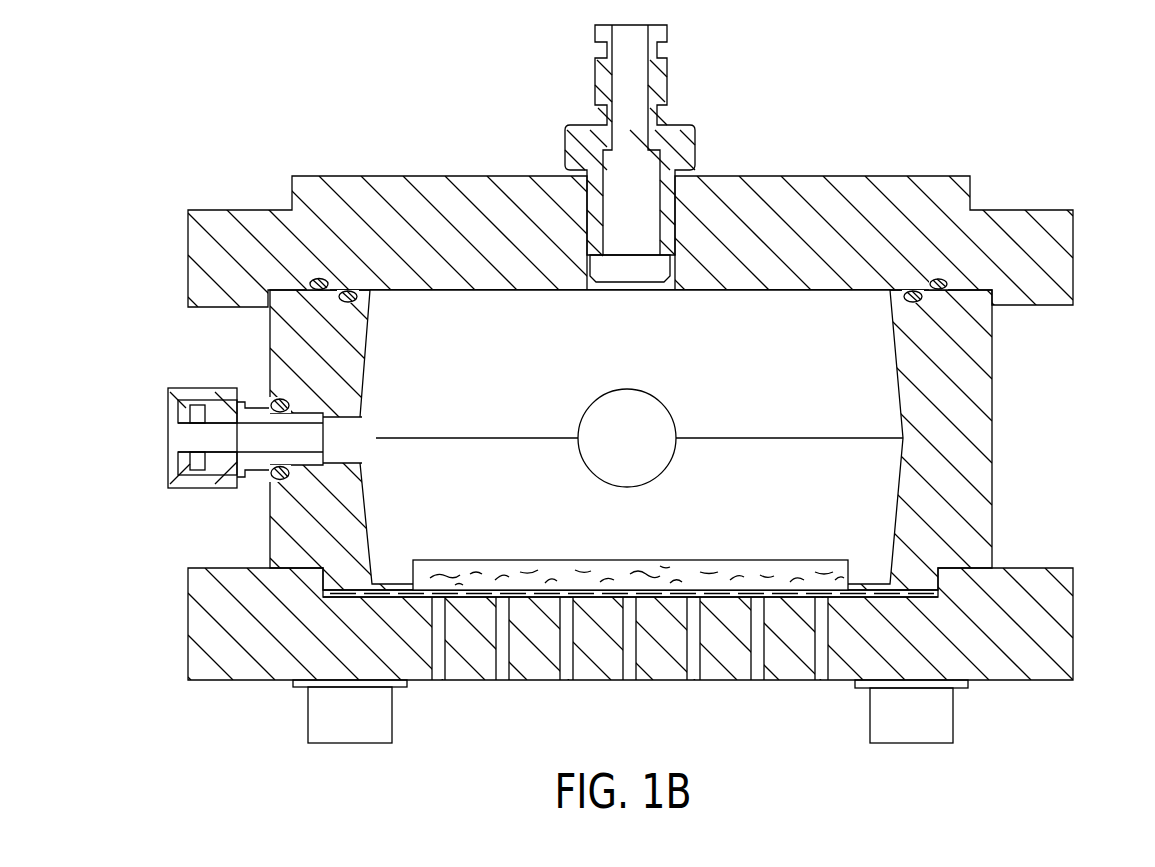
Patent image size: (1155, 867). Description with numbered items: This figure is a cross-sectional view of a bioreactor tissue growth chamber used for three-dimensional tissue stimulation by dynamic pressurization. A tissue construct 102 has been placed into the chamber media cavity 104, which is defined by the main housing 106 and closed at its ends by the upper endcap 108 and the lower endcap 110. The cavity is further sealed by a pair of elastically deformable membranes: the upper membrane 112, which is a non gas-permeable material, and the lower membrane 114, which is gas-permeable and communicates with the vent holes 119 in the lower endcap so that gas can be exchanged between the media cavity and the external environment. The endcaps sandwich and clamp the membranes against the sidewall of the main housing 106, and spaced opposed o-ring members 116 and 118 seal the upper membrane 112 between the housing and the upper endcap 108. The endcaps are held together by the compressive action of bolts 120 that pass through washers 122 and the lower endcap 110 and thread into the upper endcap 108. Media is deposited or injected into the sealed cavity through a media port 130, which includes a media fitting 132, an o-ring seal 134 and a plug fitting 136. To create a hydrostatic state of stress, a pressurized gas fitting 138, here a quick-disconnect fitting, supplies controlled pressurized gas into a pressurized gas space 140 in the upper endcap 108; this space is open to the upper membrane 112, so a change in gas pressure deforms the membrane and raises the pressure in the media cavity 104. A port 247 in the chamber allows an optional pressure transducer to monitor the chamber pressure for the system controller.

The tissue construct 102 is at (565, 557).
The chamber media cavity 104 is at (832, 323).
The main housing 106 is at (975, 415).
The upper endcap 108 is at (1063, 233).
The lower endcap 110 is at (243, 665).
The upper membrane 112 is at (823, 290).
The lower membrane 114 is at (890, 602).
The o-ring member 116 is at (903, 298).
The o-ring member 118 is at (317, 278).
The vent holes 119 is at (500, 672).
The bolts 120 is at (908, 730).
The washers 122 is at (862, 690).
The media port 130 is at (170, 515).
The media fitting 132 is at (278, 405).
The o-ring seal 134 is at (278, 476).
The plug fitting 136 is at (168, 407).
The pressurized gas fitting 138 is at (682, 142).
The pressurized gas space 140 is at (622, 272).
The port 247 is at (657, 460).